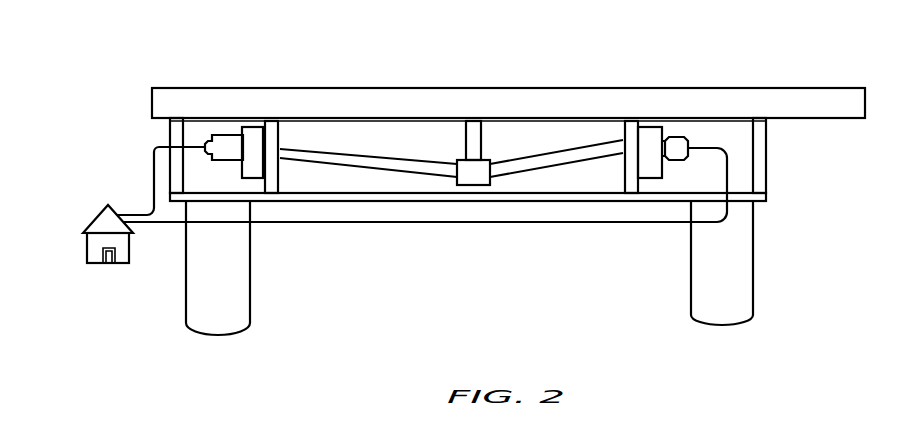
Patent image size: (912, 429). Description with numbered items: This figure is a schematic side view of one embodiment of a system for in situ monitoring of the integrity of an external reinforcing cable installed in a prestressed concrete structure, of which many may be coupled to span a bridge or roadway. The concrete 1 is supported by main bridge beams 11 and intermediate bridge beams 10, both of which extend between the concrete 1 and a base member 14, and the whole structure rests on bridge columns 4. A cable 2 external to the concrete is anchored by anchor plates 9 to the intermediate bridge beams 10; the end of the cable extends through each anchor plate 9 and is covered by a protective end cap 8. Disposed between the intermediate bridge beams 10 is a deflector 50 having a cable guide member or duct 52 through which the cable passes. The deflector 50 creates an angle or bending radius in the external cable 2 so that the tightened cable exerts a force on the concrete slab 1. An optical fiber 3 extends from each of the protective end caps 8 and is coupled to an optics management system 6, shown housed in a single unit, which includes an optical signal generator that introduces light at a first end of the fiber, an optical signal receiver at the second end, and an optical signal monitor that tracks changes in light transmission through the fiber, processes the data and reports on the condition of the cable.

The concrete 1 is at (392, 107).
The cable 2 is at (553, 157).
The optical fiber 3 is at (145, 210).
The bridge columns 4 is at (222, 317).
The optics management system 6 is at (87, 250).
The protective end cap 8 is at (224, 137).
The anchor plates 9 is at (255, 127).
The intermediate bridge beams 10 is at (277, 168).
The main bridge beams 11 is at (172, 135).
The base member 14 is at (603, 198).
The deflector 50 is at (480, 133).
The cable guide member or duct 52 is at (473, 175).